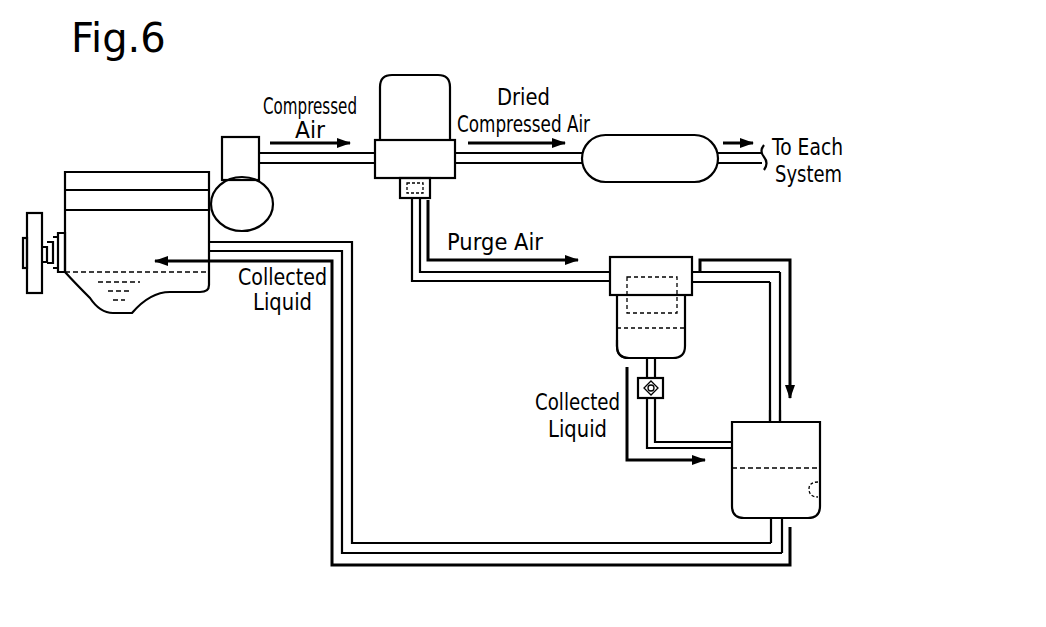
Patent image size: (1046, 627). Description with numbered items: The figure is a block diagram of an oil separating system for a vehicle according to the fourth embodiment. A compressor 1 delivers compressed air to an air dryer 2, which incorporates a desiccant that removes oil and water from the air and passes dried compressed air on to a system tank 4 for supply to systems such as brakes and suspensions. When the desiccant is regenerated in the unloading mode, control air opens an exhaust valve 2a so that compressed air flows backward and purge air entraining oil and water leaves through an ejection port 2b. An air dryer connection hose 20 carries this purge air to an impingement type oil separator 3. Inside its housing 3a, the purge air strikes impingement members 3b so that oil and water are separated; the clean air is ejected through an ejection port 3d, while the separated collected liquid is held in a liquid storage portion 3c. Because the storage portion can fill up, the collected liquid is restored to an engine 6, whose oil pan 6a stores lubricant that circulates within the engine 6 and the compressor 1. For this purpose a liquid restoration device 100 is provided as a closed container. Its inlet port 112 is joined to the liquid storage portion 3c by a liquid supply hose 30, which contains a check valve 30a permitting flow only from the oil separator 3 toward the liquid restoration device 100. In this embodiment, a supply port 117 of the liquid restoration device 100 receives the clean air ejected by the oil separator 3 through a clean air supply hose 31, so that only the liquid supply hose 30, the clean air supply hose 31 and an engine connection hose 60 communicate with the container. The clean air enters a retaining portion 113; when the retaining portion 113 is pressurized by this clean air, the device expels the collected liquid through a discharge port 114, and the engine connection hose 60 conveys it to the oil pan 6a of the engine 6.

The compressor 1 is at (232, 137).
The air dryer 2 is at (450, 103).
The exhaust valve 2a is at (397, 195).
The ejection port 2b is at (428, 200).
The air dryer connection hose 20 is at (411, 234).
The oil separator 3 is at (691, 257).
The housing 3a is at (617, 315).
The impingement members 3b is at (660, 277).
The liquid storage portion 3c is at (620, 357).
The ejection port 3d is at (707, 282).
The liquid supply hose 30 is at (656, 370).
The check valve 30a is at (663, 392).
The clean air supply hose 31 is at (770, 315).
The system tank 4 is at (670, 135).
The engine 6 is at (134, 172).
The oil pan 6a is at (167, 293).
The engine connection hose 60 is at (352, 322).
The liquid restoration device 100 is at (820, 453).
The inlet port 112 is at (732, 452).
The retaining portion 113 is at (820, 486).
The discharge port 114 is at (766, 521).
The supply port 117 is at (783, 420).